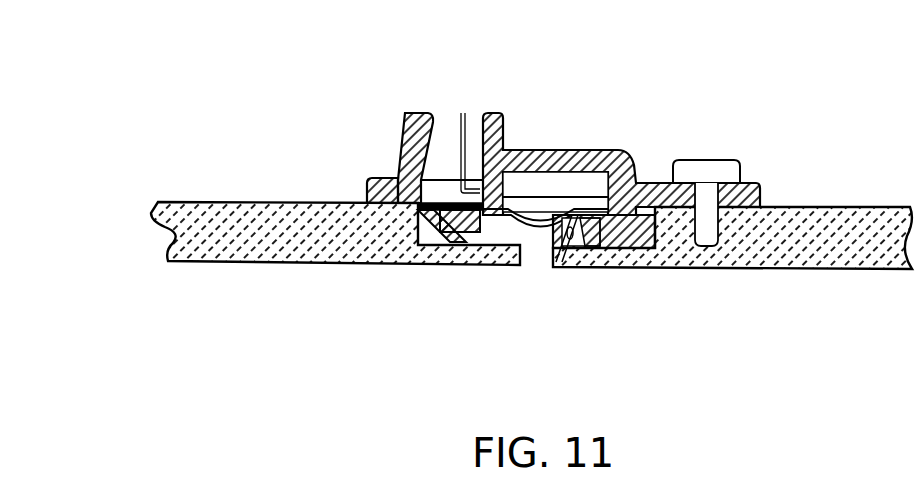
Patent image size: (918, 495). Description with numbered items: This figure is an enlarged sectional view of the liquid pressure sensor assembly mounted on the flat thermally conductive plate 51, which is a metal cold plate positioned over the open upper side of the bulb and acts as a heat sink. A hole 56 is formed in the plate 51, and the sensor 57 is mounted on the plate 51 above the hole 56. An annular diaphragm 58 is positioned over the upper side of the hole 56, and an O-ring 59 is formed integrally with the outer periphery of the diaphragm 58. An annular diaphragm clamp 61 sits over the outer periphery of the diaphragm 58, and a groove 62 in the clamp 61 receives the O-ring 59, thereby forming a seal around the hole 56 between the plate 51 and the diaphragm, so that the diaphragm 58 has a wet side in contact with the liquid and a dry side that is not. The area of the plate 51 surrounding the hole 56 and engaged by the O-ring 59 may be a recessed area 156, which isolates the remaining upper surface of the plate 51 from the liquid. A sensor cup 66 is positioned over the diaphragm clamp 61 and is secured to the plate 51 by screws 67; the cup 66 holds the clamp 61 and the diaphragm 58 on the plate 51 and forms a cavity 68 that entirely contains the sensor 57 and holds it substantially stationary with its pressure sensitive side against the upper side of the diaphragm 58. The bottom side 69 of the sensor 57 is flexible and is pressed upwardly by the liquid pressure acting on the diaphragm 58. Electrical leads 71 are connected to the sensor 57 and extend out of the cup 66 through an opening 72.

The thermally conductive plate 51 is at (168, 255).
The hole 56 is at (521, 250).
The sensor 57 is at (572, 190).
The annular diaphragm 58 is at (570, 250).
The O-ring 59 is at (452, 250).
The diaphragm clamp 61 is at (418, 248).
The groove 62 is at (627, 267).
The sensor cup 66 is at (367, 184).
The screws 67 is at (710, 172).
The cavity 68 is at (520, 186).
The bottom side 69 is at (557, 237).
The electrical leads 71 is at (460, 114).
The opening 72 is at (434, 128).
The recessed area 156 is at (565, 265).